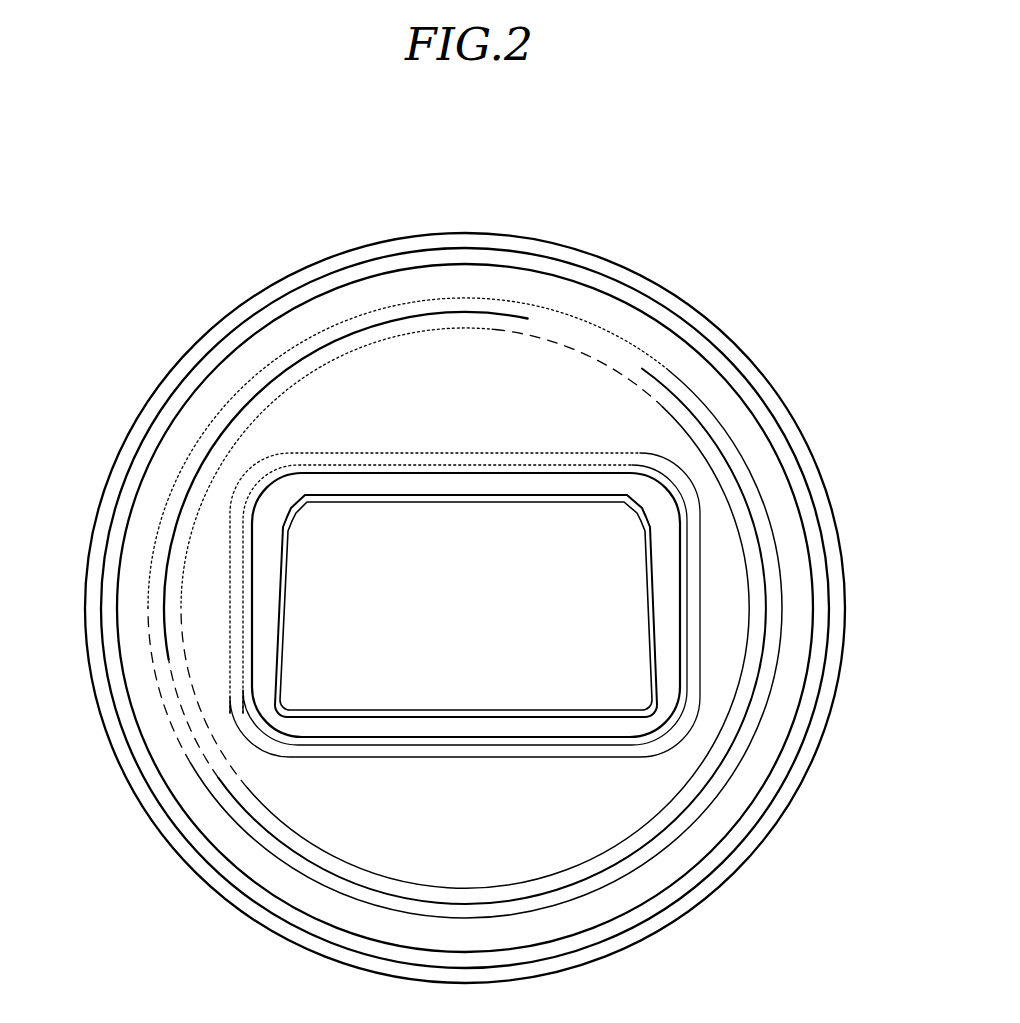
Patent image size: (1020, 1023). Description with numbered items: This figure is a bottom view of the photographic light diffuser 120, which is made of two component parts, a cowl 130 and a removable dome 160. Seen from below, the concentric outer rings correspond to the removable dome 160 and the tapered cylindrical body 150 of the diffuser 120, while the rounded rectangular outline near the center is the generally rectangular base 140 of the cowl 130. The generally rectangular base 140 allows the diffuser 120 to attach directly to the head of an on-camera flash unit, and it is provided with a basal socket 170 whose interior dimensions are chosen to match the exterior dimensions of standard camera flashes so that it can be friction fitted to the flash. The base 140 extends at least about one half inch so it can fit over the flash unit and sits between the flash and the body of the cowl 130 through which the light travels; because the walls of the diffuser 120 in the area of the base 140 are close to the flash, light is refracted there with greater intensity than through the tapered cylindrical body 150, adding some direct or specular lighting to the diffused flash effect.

The diffuser 120 is at (188, 916).
The cowl 130 is at (698, 488).
The generally rectangular base 140 is at (603, 738).
The tapered cylindrical body 150 is at (658, 865).
The removable dome 160 is at (657, 282).
The basal socket 170 is at (337, 725).